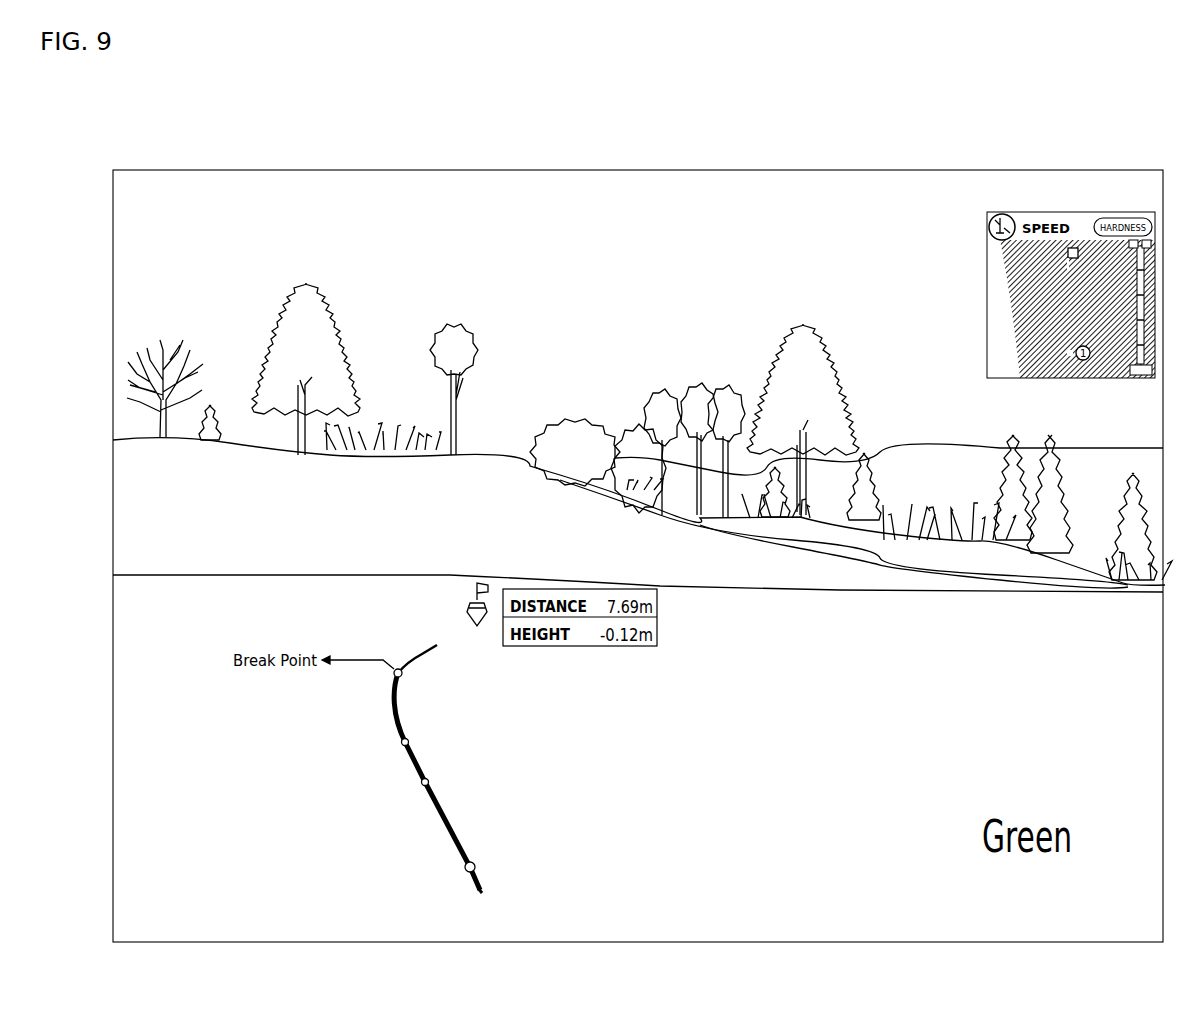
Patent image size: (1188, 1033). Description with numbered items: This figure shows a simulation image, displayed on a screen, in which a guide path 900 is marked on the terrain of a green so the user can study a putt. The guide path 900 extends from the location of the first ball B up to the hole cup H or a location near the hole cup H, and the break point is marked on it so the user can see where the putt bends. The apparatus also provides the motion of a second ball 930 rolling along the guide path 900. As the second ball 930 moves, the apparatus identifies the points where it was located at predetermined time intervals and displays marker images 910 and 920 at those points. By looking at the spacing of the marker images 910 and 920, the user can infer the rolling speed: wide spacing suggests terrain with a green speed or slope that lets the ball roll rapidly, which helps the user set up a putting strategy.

The guide path 900 is at (420, 657).
The marker image 910 is at (466, 869).
The marker image 920 is at (421, 784).
The second ball 930 is at (401, 745).
The hole cup H is at (462, 617).
The first ball B is at (480, 891).